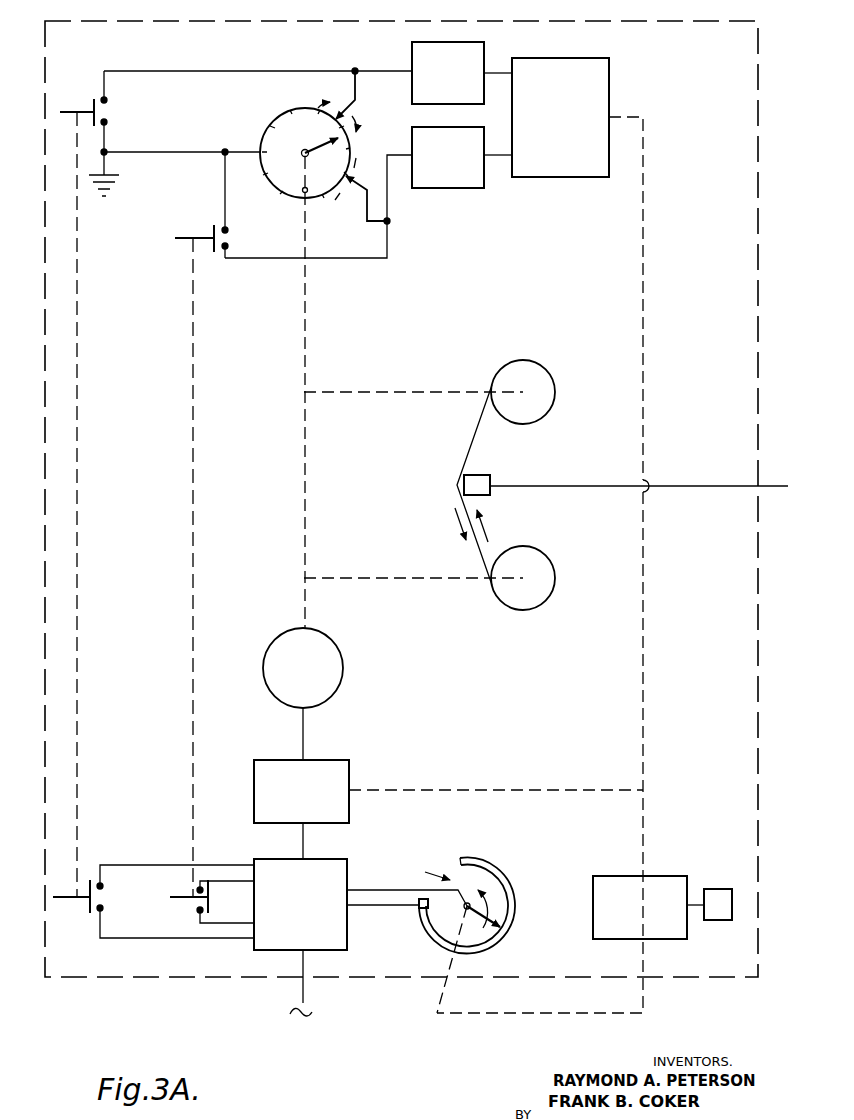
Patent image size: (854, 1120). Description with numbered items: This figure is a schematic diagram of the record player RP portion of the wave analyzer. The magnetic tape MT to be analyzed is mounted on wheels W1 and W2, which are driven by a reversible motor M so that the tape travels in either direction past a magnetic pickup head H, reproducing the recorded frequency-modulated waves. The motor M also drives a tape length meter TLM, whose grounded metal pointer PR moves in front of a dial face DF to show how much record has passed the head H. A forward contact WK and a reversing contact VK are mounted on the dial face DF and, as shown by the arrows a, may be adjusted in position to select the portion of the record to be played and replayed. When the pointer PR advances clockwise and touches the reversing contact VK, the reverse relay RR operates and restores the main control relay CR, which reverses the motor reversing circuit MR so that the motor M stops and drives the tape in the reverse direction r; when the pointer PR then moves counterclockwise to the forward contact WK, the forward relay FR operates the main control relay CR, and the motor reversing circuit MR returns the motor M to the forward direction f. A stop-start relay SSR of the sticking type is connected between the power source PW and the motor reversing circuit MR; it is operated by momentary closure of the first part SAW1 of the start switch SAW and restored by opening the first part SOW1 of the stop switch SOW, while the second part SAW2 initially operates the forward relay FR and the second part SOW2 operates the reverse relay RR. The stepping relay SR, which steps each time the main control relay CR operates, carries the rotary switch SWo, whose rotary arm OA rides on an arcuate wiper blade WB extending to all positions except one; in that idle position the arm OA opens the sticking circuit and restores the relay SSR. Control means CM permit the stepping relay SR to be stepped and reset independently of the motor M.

The record player RP is at (335, 22).
The main control relay CR is at (610, 90).
The forward relay FR is at (485, 52).
The reverse relay RR is at (470, 190).
The second part of start switch SAW2 is at (105, 67).
The start switch SAW is at (80, 550).
The stop switch SOW is at (195, 522).
The second part of stop switch SOW2 is at (222, 250).
The tape length meter TLM is at (270, 184).
The dial face DF is at (280, 120).
The pointer PR is at (312, 378).
The forward contact WK is at (352, 106).
The reversing contact VK is at (353, 186).
The arrows a is at (342, 146).
The wheel W2 is at (429, 392).
The wheel W1 is at (429, 578).
The magnetic tape MT is at (472, 438).
The magnetic pickup head H is at (470, 472).
The forward direction f is at (453, 524).
The reverse direction r is at (488, 526).
The reversible motor M is at (343, 673).
The motor reversing circuit MR is at (350, 769).
The first part of start switch SAW1 is at (98, 877).
The first part of stop switch SOW1 is at (203, 878).
The stop-start relay SSR is at (349, 868).
The printing wheel PW is at (318, 998).
The rotary switch SWo is at (407, 886).
The wiper blade WB is at (490, 868).
The rotary arm OA is at (482, 953).
The stepping relay SR is at (655, 873).
The control means CM is at (705, 922).